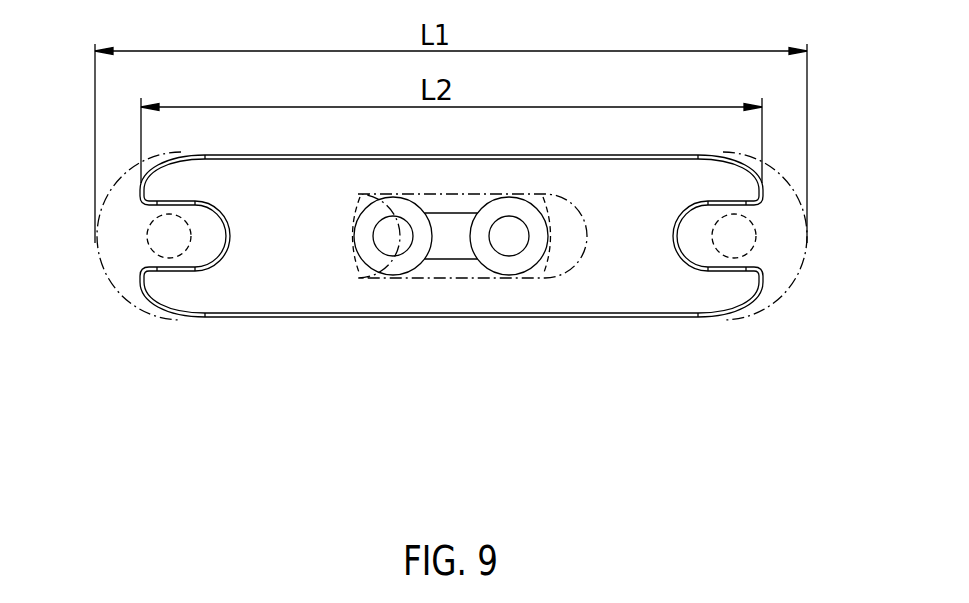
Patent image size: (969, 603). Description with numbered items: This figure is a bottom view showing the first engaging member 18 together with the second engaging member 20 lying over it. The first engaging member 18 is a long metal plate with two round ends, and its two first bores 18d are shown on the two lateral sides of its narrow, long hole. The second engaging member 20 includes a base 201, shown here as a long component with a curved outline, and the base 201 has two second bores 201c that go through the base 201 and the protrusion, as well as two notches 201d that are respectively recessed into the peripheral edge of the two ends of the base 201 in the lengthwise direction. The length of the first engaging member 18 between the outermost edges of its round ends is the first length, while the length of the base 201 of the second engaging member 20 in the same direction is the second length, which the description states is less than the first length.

The first engaging member 18 is at (772, 307).
The first bores 18d is at (152, 250).
The second engaging member 20 is at (451, 308).
The base 201 is at (480, 335).
The second bores 201c is at (393, 238).
The notches 201d is at (228, 253).